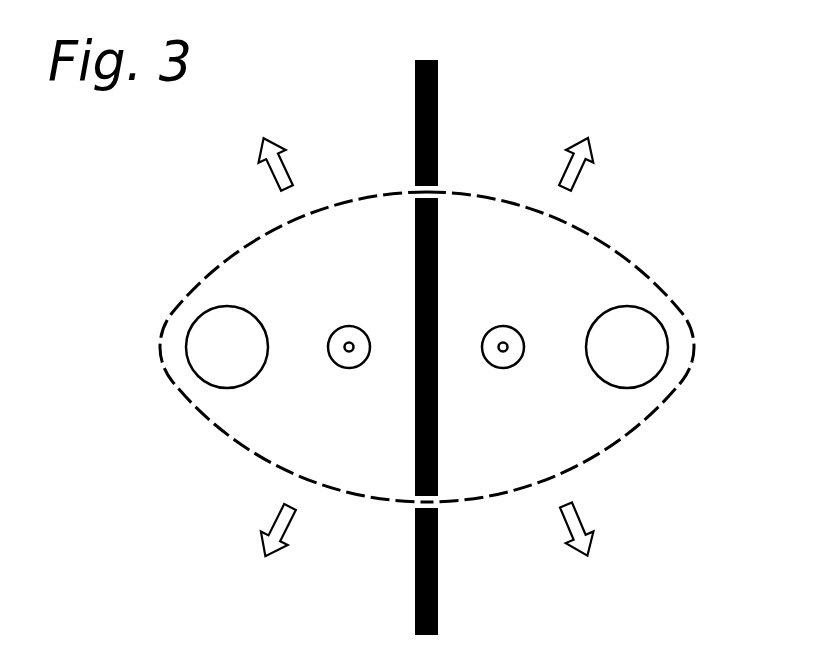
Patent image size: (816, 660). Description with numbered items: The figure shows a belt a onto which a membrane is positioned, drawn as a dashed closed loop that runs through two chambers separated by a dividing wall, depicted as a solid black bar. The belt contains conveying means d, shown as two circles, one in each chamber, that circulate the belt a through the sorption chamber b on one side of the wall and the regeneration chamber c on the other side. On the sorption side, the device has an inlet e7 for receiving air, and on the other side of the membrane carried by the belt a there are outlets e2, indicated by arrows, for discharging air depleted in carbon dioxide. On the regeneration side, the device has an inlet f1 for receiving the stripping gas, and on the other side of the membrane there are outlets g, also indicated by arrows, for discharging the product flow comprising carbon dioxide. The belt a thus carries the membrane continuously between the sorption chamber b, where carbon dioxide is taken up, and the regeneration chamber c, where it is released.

The belt a is at (633, 265).
The sorption chamber b is at (372, 455).
The regeneration chamber c is at (473, 455).
The conveying means d is at (427, 347).
The inlet e7 is at (333, 342).
The inlet f1 is at (515, 357).
The outlets e2 is at (298, 203).
The outlets g is at (548, 200).